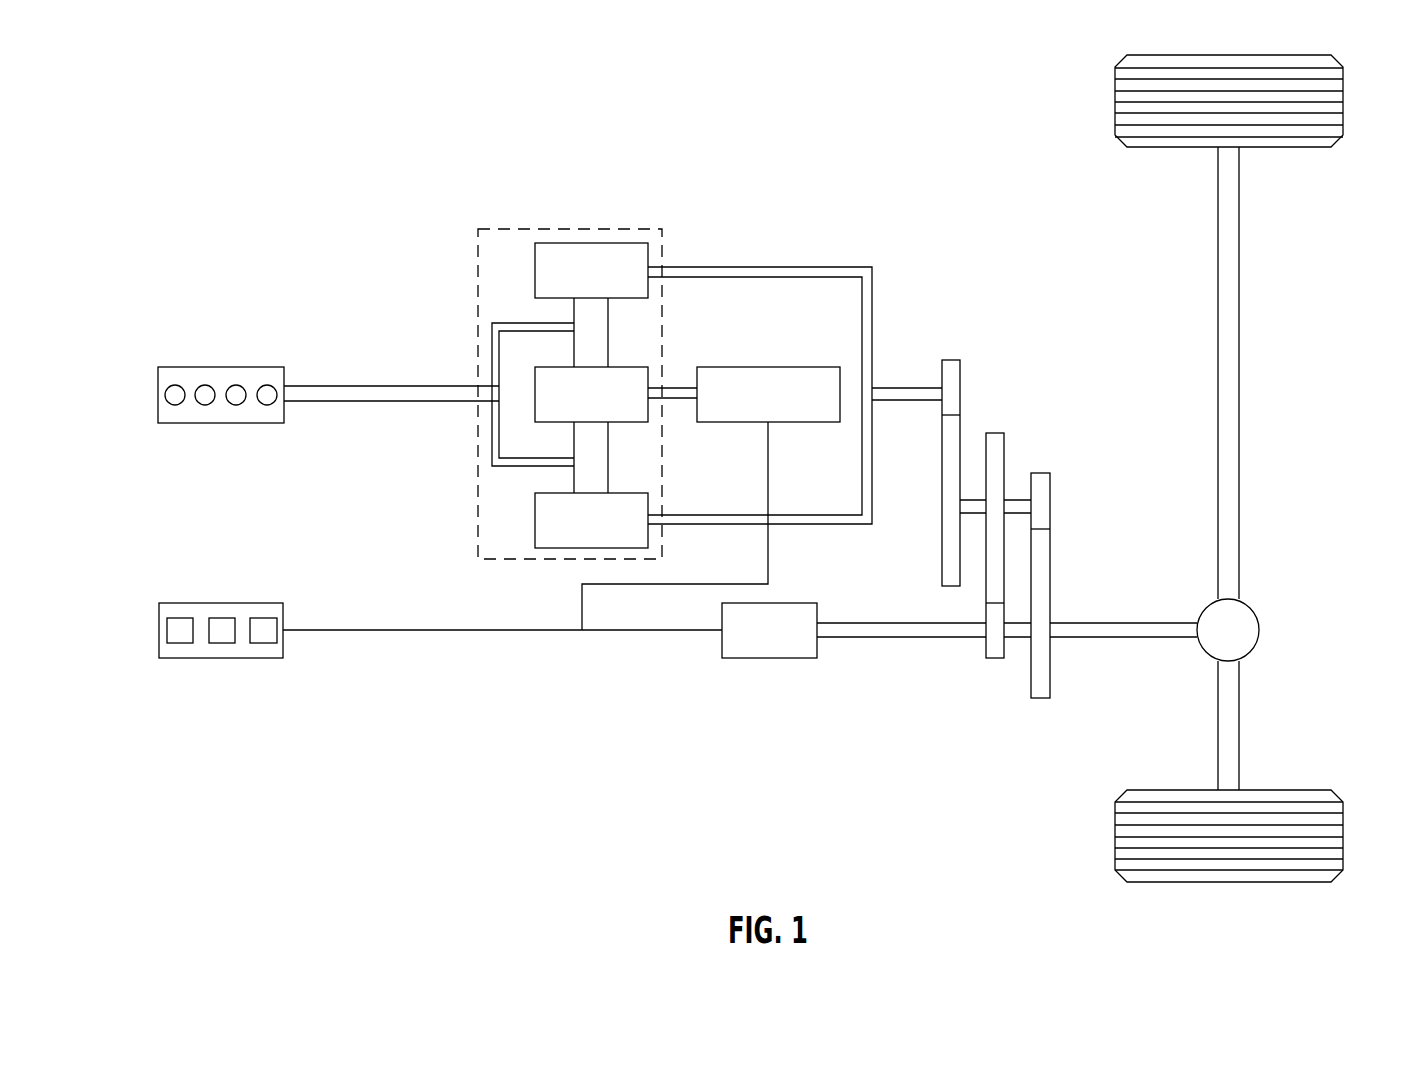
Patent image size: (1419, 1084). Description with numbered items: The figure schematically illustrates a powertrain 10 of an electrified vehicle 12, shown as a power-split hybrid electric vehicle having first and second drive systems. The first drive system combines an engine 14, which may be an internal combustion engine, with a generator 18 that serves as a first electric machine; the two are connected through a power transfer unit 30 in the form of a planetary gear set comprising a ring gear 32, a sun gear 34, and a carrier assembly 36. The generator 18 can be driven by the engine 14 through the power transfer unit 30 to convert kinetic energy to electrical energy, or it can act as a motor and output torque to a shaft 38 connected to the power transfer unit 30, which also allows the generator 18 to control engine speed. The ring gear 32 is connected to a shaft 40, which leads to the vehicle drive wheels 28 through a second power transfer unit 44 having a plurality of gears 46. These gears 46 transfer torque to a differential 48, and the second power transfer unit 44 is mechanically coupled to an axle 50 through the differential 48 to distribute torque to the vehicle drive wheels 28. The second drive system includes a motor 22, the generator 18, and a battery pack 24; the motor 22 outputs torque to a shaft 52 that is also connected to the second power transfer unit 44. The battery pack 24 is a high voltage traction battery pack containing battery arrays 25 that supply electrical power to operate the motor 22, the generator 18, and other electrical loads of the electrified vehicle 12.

The powertrain 10 is at (278, 167).
The electrified vehicle 12 is at (783, 213).
The engine 14 is at (221, 424).
The generator 18 is at (785, 364).
The motor 22 is at (768, 659).
The battery pack 24 is at (193, 616).
The battery arrays 25 is at (180, 633).
The vehicle drive wheels 28 is at (1343, 96).
The power transfer unit 30 is at (540, 365).
The ring gear 32 is at (590, 243).
The sun gear 34 is at (565, 366).
The carrier assembly 36 is at (490, 432).
The shaft 38 is at (673, 387).
The shaft 40 is at (917, 402).
The second power transfer unit 44 is at (1038, 490).
The gears 46 is at (951, 360).
The differential 48 is at (1260, 630).
The axle 50 is at (1240, 410).
The shaft 52 is at (925, 640).